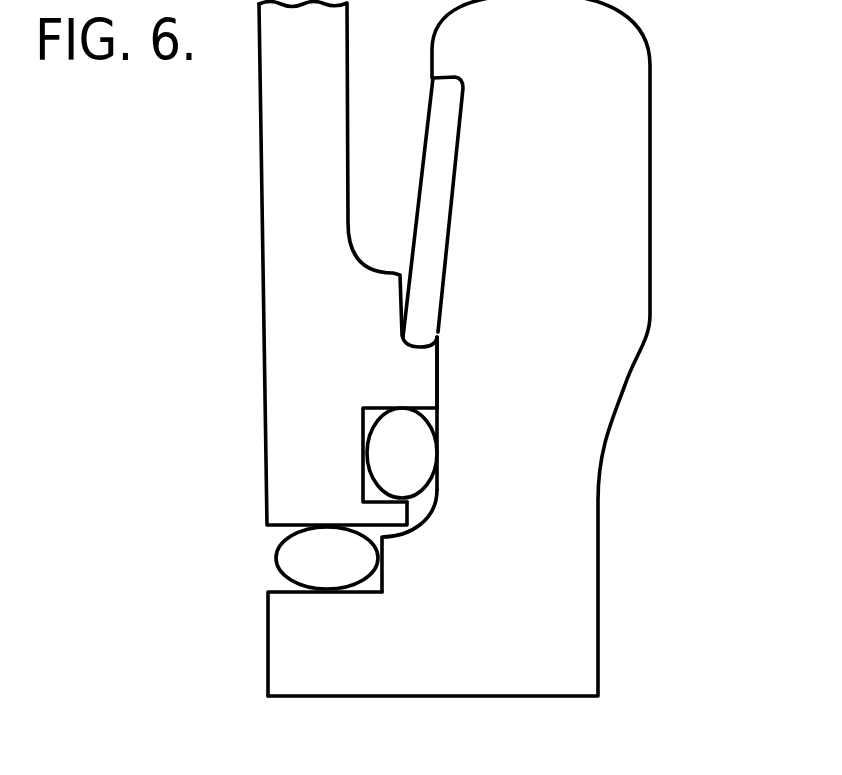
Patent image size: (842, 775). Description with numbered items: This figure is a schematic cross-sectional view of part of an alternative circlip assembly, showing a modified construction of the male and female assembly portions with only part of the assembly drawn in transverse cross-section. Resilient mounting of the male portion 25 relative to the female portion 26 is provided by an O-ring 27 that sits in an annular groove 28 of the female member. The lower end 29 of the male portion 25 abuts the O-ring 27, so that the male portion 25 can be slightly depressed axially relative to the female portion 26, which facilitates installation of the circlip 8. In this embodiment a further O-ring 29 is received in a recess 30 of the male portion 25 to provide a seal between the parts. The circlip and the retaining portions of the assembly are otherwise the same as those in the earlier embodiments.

The circlip 8 is at (437, 165).
The male portion 25 is at (303, 263).
The female portion 26 is at (612, 113).
The O-ring 27 is at (332, 567).
The annular groove 28 is at (383, 592).
The lower end 29 is at (410, 445).
The recess 30 is at (362, 412).